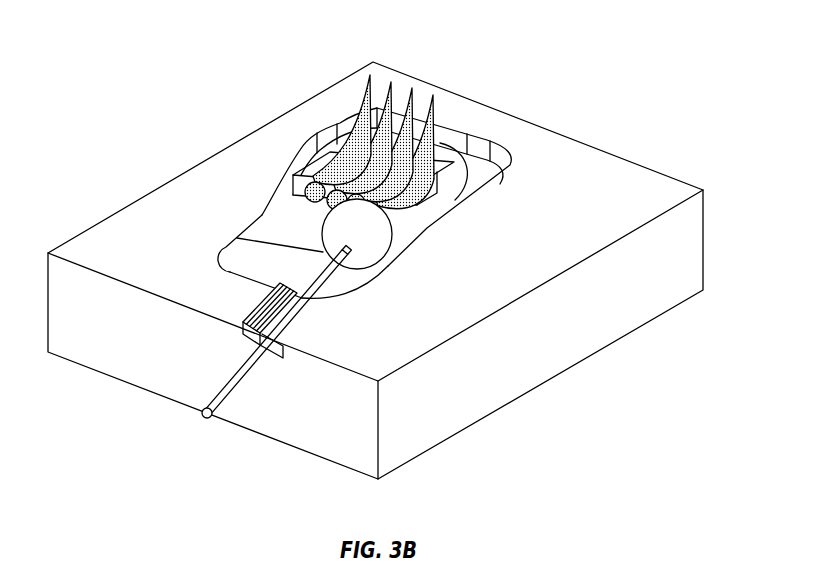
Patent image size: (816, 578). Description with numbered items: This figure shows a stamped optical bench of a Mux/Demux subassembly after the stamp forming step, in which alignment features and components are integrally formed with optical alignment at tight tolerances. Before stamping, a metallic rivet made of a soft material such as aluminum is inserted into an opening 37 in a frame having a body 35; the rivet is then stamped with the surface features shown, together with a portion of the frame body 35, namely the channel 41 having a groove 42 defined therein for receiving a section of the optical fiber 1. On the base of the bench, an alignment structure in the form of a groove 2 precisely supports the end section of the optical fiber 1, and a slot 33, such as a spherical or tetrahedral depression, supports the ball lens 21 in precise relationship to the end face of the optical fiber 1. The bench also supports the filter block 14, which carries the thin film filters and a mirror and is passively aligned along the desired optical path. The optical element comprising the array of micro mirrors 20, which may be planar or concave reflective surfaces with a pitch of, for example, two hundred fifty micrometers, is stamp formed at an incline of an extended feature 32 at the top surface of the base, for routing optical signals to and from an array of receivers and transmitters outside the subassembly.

The optical fiber 1 is at (227, 390).
The groove 2 is at (309, 288).
The filter block 14 is at (322, 146).
The array of micro mirrors 20 is at (423, 173).
The ball lens 21 is at (313, 285).
The extended feature 32 is at (440, 143).
The slot 33 is at (388, 265).
The frame body 35 is at (637, 187).
The opening 37 is at (234, 223).
The channel 41 is at (263, 320).
The groove 42 is at (283, 335).